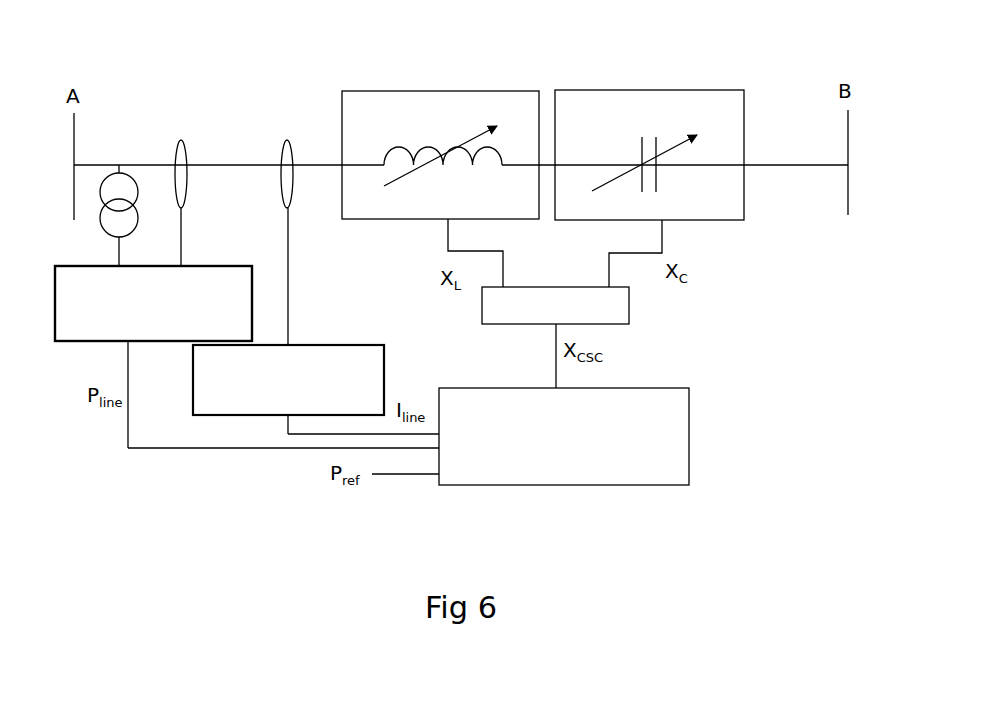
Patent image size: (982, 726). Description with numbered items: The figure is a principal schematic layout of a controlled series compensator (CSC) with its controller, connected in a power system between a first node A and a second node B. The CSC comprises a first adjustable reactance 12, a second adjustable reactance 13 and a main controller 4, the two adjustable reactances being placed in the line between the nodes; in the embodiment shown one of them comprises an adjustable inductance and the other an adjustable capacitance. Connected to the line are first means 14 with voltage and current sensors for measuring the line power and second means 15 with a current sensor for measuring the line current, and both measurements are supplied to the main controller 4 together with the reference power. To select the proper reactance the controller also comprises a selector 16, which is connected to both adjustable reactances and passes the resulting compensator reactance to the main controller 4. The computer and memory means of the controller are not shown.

The first adjustable reactance 12 is at (445, 91).
The second adjustable reactance 13 is at (648, 90).
The first means with voltage and current sensors 14 is at (83, 342).
The second means with a current sensor 15 is at (228, 417).
The selector 16 is at (629, 305).
The main controller 4 is at (689, 443).